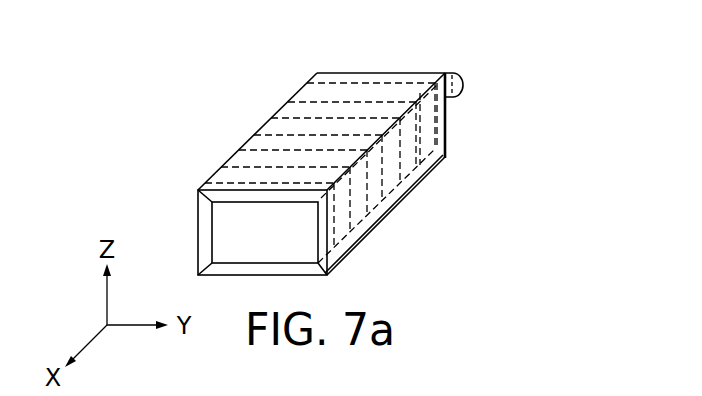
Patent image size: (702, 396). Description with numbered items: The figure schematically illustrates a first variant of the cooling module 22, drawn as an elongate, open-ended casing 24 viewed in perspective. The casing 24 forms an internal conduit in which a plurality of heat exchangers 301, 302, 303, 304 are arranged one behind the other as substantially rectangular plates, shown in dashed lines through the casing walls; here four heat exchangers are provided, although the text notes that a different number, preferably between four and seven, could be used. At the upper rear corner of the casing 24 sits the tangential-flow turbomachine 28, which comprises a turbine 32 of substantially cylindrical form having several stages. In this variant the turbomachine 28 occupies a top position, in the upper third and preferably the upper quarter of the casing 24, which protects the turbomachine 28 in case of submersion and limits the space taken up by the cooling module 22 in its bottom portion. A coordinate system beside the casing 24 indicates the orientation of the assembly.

The cooling module 22 is at (136, 91).
The casing 24 is at (395, 208).
The tangential-flow turbomachine 28 is at (482, 77).
The turbine 32 is at (450, 72).
The heat exchanger 301 is at (229, 188).
The heat exchanger 302 is at (263, 152).
The heat exchanger 303 is at (290, 117).
The heat exchanger 304 is at (315, 70).